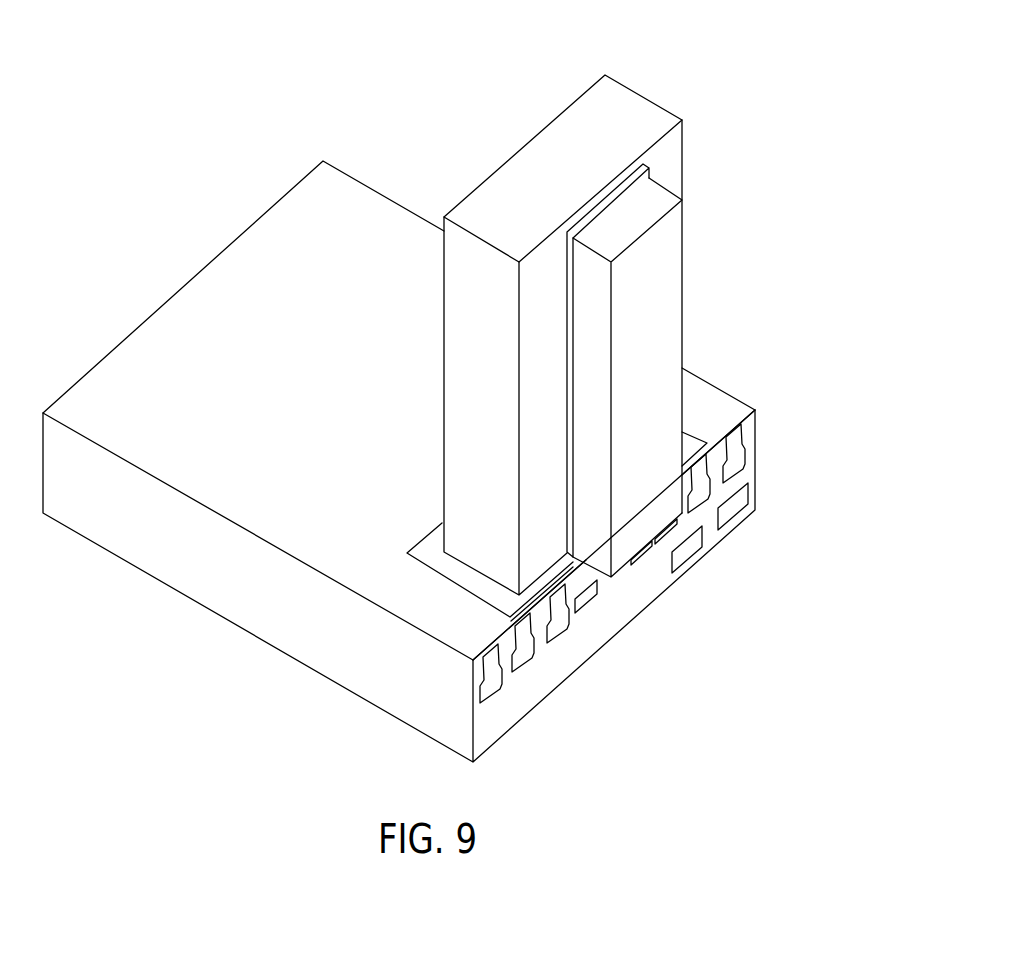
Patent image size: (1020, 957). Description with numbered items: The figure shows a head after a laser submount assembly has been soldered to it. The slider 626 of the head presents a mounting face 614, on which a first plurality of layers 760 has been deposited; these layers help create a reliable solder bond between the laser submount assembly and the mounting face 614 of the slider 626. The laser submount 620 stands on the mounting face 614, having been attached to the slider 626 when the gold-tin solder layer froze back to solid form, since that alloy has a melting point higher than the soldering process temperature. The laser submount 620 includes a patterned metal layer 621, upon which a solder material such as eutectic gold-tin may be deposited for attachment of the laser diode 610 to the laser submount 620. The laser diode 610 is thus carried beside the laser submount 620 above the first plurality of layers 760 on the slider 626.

The mounting face 614 is at (258, 245).
The slider 626 is at (88, 370).
The first plurality of layers 760 is at (427, 555).
The laser submount 620 is at (627, 107).
The patterned metal layer 621 is at (650, 158).
The laser diode 610 is at (665, 260).